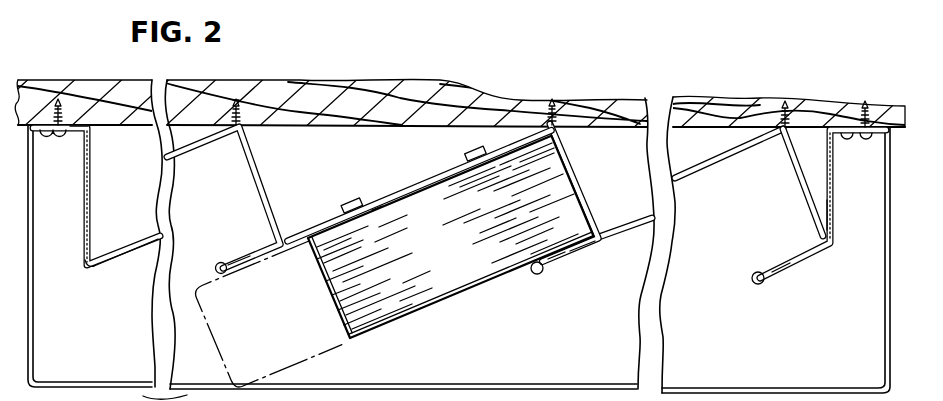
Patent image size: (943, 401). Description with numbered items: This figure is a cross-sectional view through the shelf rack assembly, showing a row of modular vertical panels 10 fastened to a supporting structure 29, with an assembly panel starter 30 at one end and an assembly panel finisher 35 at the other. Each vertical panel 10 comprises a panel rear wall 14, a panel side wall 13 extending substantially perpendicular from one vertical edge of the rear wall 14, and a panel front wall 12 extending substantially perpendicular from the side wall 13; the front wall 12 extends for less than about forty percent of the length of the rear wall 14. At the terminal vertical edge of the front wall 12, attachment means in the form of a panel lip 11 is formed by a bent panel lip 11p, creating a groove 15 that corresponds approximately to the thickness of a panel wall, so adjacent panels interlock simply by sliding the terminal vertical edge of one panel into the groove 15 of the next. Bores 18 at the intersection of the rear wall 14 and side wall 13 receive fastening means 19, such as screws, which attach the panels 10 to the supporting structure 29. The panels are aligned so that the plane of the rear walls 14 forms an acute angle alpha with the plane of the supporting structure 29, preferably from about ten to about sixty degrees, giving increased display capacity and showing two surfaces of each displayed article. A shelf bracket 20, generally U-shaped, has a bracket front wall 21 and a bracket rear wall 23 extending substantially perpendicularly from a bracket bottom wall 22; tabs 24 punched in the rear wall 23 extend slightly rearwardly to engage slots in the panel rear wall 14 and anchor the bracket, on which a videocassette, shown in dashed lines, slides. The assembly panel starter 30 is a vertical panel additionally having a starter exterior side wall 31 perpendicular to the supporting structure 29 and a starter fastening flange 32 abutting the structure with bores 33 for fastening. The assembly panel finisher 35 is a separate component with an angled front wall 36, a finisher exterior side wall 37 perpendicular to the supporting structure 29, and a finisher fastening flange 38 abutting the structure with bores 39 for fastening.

The modular vertical panel 10 is at (378, 193).
The panel lip 11 is at (548, 270).
The panel lip 11p is at (221, 260).
The panel front wall 12 is at (567, 256).
The panel side wall 13 is at (565, 172).
The panel rear wall 14 is at (133, 258).
The groove 15 is at (535, 278).
The bore 18 is at (234, 126).
The fastening means 19 is at (239, 110).
The shelf bracket 20 is at (463, 296).
The bracket front wall 21 is at (489, 280).
The bracket bottom wall 22 is at (412, 300).
The bracket rear wall 23 is at (410, 202).
The tab 24 is at (483, 150).
The supporting structure 29 is at (388, 80).
The assembly panel starter 30 is at (83, 213).
The starter exterior side wall 31 is at (84, 242).
The starter fastening flange 32 is at (72, 128).
The bore 33 is at (37, 128).
The assembly panel finisher 35 is at (838, 216).
The angled front wall 36 is at (802, 264).
The finisher exterior side wall 37 is at (835, 183).
The finisher fastening flange 38 is at (839, 137).
The bore 39 is at (870, 115).